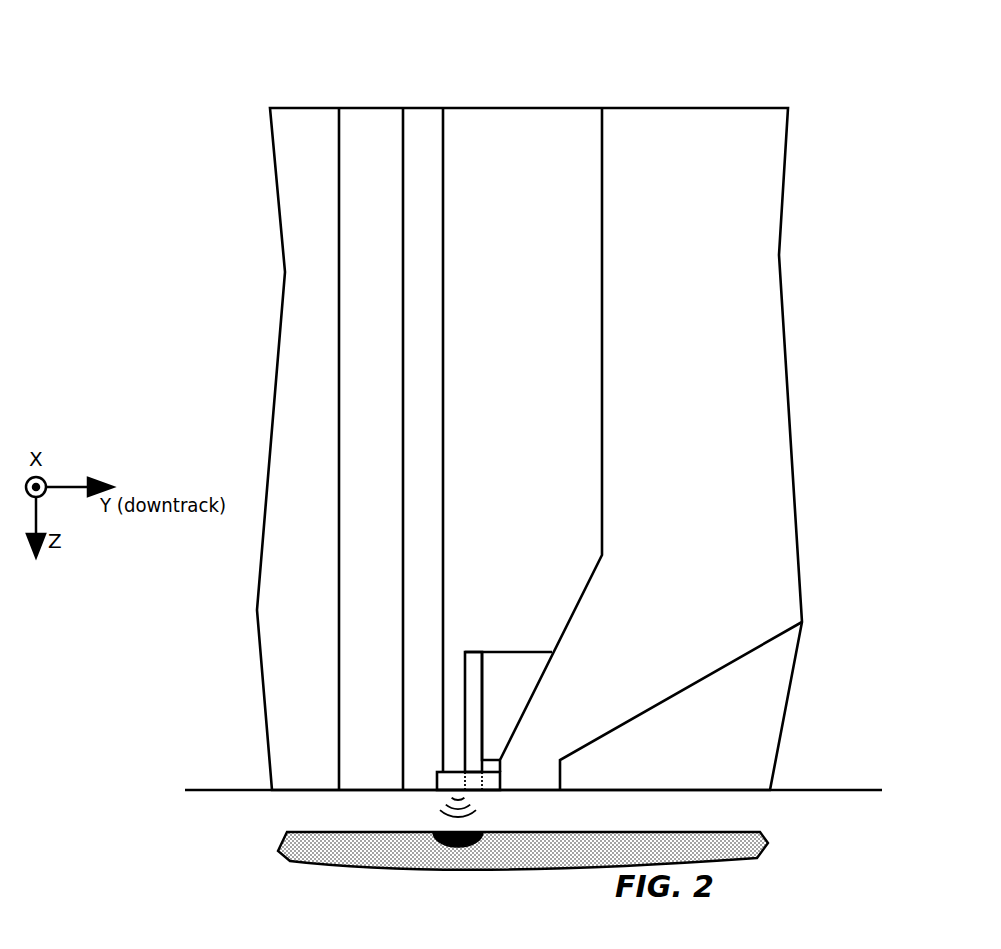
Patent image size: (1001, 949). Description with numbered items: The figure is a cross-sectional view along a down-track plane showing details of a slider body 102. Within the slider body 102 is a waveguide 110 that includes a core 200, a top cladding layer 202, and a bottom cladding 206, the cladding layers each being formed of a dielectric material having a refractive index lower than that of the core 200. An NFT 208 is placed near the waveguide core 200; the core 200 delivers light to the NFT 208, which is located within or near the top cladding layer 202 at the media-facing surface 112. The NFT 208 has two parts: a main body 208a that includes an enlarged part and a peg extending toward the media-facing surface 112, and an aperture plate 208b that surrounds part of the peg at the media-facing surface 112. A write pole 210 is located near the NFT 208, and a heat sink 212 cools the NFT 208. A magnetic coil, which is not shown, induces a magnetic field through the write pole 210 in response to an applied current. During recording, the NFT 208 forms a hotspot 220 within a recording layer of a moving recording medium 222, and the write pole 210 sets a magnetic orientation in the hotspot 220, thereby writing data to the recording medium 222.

The slider body 102 is at (256, 56).
The waveguide 110 is at (258, 229).
The bottom cladding 206 is at (356, 120).
The core 200 is at (413, 120).
The top cladding layer 202 is at (572, 128).
The NFT 208 is at (423, 677).
The main body 208a is at (462, 705).
The aperture plate 208b is at (437, 775).
The heat sink 212 is at (504, 658).
The write pole 210 is at (613, 730).
The media-facing surface 112 is at (870, 792).
The recording medium 222 is at (717, 832).
The hotspot 220 is at (456, 850).